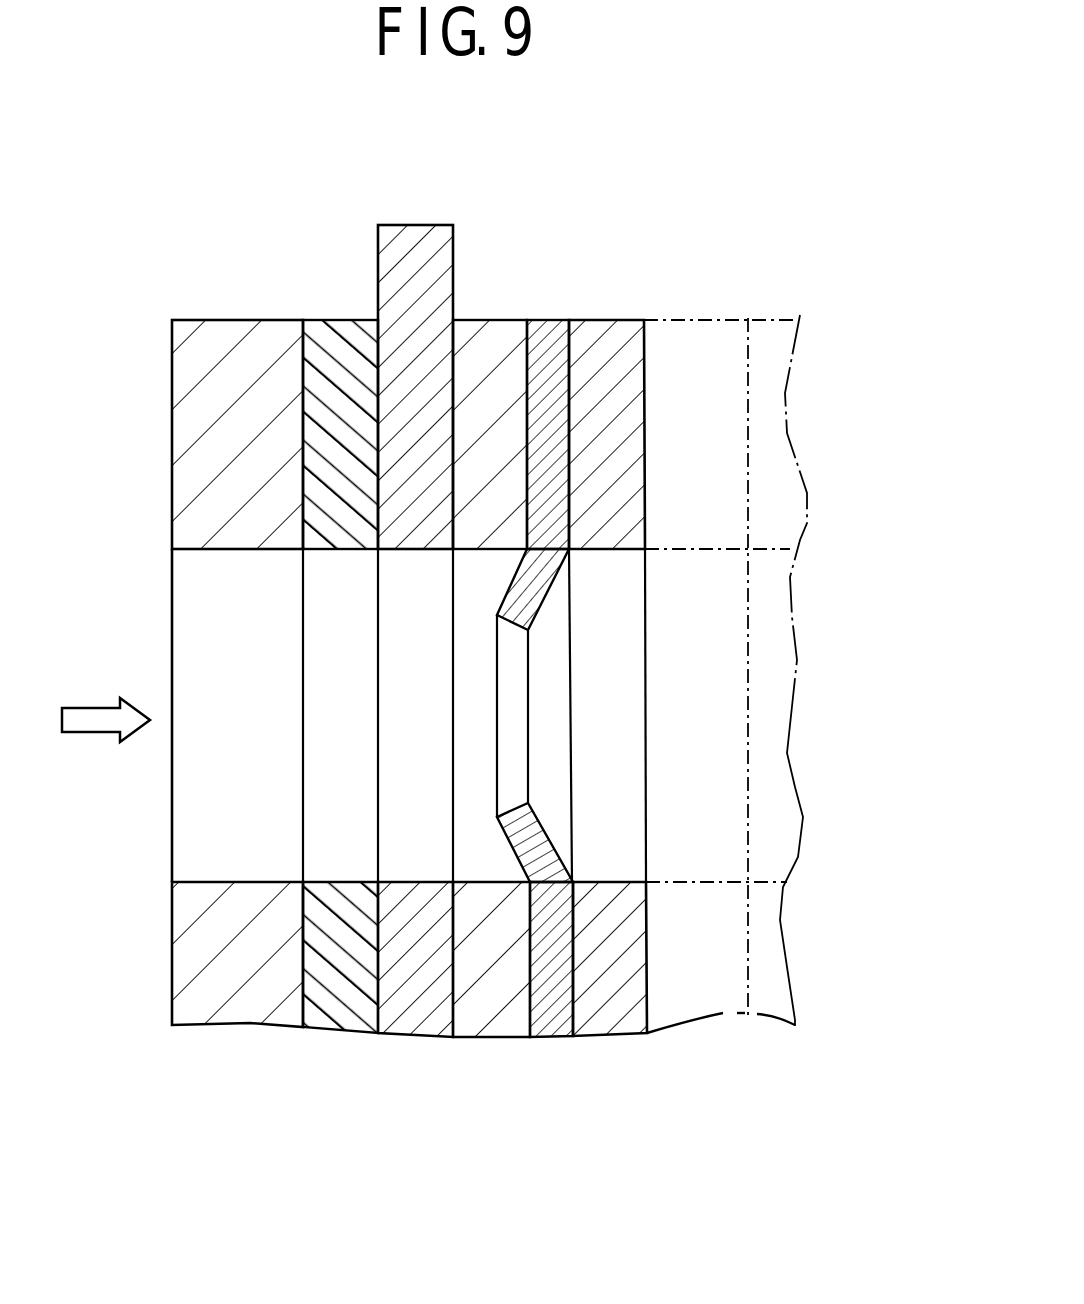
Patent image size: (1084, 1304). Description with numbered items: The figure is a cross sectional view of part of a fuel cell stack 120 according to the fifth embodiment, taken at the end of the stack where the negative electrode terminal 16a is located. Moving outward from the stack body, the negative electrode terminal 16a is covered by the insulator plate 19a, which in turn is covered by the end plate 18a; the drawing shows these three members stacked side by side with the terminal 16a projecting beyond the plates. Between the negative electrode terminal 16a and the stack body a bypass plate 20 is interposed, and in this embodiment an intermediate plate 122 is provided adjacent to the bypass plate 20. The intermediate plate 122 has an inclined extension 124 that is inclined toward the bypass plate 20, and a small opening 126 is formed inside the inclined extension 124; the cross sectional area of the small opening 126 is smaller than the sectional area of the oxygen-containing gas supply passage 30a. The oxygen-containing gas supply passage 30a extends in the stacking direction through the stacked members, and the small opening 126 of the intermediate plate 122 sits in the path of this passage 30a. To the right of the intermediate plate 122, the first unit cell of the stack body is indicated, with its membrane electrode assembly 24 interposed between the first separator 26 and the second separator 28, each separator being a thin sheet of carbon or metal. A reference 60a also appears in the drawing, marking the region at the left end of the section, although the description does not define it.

The fuel cell stack 120 is at (702, 198).
The negative electrode terminal 16a is at (410, 263).
The end plate 18a is at (230, 357).
The insulator plate 19a is at (340, 357).
The bypass plate 20 is at (490, 313).
The intermediate plate 122 is at (558, 1040).
The inclined extension 124 is at (550, 850).
The small opening 126 is at (513, 753).
The first separator 26 is at (613, 1040).
The membrane electrode assembly 24 is at (699, 1018).
The second separator 28 is at (795, 1026).
The oxygen-containing gas supply passage 30a is at (698, 687).
The inlet opening 60a is at (203, 622).